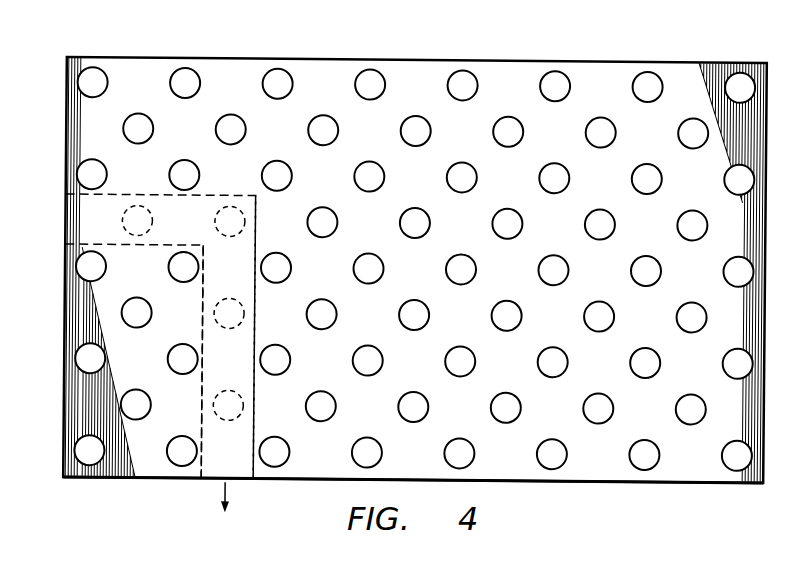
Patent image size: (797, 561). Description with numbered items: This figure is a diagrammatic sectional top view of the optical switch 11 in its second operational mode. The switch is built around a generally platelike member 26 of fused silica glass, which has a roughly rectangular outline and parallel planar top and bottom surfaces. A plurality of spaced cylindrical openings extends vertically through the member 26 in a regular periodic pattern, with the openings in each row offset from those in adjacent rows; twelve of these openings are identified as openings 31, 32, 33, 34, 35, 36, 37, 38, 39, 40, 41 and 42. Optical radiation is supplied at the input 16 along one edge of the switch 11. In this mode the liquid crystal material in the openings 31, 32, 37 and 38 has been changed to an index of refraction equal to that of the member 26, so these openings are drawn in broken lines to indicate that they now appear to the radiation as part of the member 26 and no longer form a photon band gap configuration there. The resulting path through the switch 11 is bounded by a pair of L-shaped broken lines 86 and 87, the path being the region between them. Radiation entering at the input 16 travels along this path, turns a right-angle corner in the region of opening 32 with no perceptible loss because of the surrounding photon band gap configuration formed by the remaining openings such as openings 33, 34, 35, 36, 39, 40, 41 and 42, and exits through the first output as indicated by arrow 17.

The optical switch 11 is at (505, 56).
The input 16 is at (56, 222).
The arrow 17 is at (223, 487).
The platelike member 26 is at (64, 315).
The opening 31 is at (137, 208).
The opening 32 is at (230, 208).
The opening 33 is at (322, 208).
The opening 34 is at (414, 208).
The opening 35 is at (507, 208).
The opening 36 is at (600, 208).
The opening 37 is at (230, 300).
The opening 38 is at (230, 392).
The opening 39 is at (414, 330).
The opening 40 is at (414, 423).
The opening 41 is at (600, 331).
The opening 42 is at (600, 423).
The L-shaped broken line 86 is at (203, 425).
The L-shaped broken line 87 is at (255, 425).